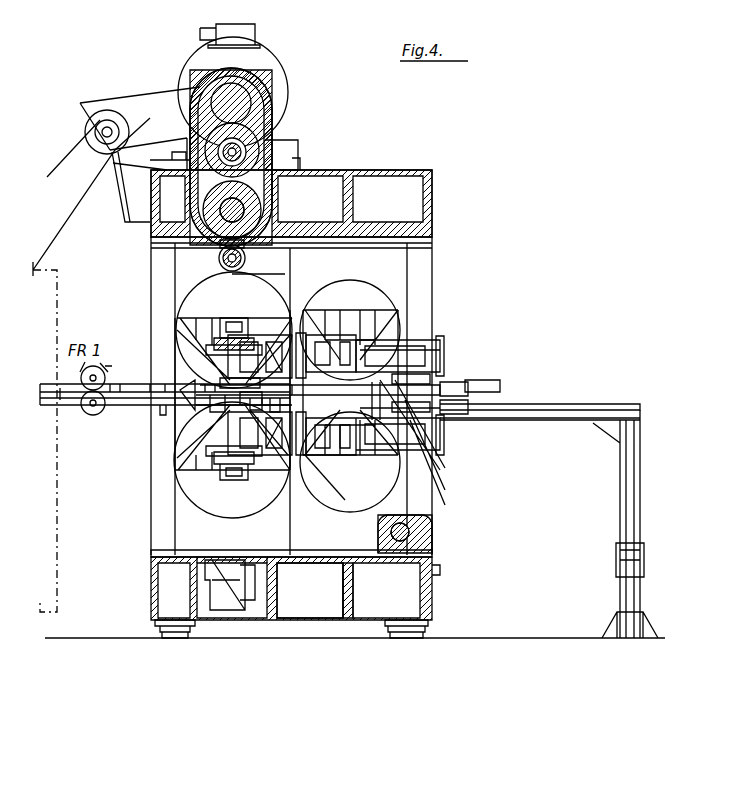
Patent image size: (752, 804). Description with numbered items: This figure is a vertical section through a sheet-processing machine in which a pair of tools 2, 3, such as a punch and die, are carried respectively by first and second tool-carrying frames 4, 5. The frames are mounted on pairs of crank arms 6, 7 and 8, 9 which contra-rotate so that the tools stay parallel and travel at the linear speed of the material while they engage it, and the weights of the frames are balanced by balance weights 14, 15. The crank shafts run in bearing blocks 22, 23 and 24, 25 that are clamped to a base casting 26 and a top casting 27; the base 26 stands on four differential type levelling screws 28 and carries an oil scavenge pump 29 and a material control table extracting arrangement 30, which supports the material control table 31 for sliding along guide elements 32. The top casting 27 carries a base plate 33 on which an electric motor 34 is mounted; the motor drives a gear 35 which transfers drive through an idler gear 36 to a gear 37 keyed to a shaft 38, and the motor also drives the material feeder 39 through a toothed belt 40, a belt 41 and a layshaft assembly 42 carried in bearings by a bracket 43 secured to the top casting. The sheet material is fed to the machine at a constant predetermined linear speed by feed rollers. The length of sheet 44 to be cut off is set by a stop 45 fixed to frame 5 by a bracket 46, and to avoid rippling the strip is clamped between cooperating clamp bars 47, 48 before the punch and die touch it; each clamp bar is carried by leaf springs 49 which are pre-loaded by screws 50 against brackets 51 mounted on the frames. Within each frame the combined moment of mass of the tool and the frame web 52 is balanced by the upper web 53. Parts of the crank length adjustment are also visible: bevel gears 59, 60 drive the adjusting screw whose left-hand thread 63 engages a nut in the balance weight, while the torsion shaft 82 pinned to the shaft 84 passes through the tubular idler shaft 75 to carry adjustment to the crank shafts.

The tool 2 is at (215, 380).
The tool 3 is at (200, 415).
The first tool-carrying frame 4 is at (300, 333).
The second tool-carrying frame 5 is at (262, 455).
The crank arm 6 is at (215, 330).
The crank arm 7 is at (396, 330).
The crank arm 8 is at (176, 455).
The crank arm 9 is at (392, 470).
The balance weight 14 is at (298, 300).
The balance weight 15 is at (262, 502).
The bearing block 22 is at (175, 263).
The bearing block 23 is at (432, 265).
The bearing block 24 is at (188, 526).
The bearing block 25 is at (312, 560).
The base casting 26 is at (346, 618).
The top casting 27 is at (352, 190).
The levelling screw 28 is at (188, 640).
The oil scavenge pump 29 is at (225, 605).
The material control table extracting arrangement 30 is at (432, 530).
The material control table 31 is at (482, 404).
The guide element 32 is at (575, 420).
The base plate 33 is at (272, 160).
The electric motor 34 is at (276, 75).
The gear 35 is at (247, 103).
The idler gear 36 is at (257, 135).
The gear 37 is at (262, 200).
The shaft 38 is at (247, 213).
The material feeder 39 is at (58, 307).
The toothed belt 40 is at (135, 96).
The belt 41 is at (50, 255).
The layshaft assembly 42 is at (100, 122).
The bracket 43 is at (122, 220).
The sheet 44 is at (412, 430).
The stop 45 is at (480, 386).
The bracket 46 is at (455, 382).
The clamp bar 47 is at (400, 350).
The clamp bar 48 is at (400, 450).
The leaf spring 49 is at (392, 345).
The screw 50 is at (412, 376).
The bracket 51 is at (400, 355).
The frame web 52 is at (222, 357).
The upper web 53 is at (214, 318).
The bevel gear 59 is at (258, 345).
The bevel gear 60 is at (252, 338).
The left-hand thread 63 is at (235, 318).
The tubular idler shaft 75 is at (246, 258).
The torsion shaft 82 is at (219, 258).
The shaft 84 is at (252, 278).